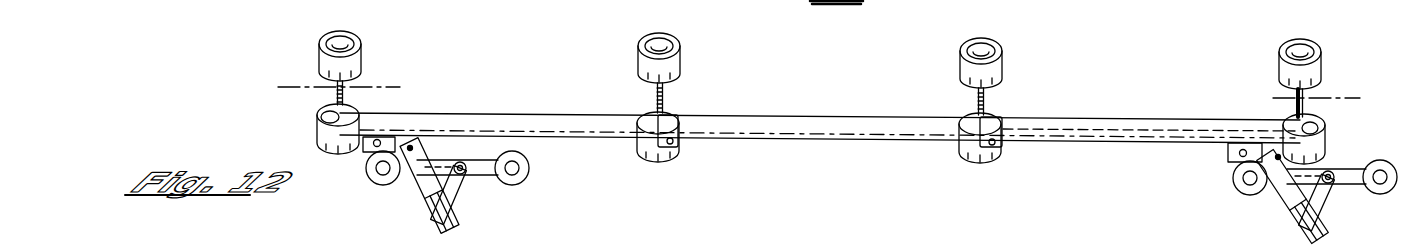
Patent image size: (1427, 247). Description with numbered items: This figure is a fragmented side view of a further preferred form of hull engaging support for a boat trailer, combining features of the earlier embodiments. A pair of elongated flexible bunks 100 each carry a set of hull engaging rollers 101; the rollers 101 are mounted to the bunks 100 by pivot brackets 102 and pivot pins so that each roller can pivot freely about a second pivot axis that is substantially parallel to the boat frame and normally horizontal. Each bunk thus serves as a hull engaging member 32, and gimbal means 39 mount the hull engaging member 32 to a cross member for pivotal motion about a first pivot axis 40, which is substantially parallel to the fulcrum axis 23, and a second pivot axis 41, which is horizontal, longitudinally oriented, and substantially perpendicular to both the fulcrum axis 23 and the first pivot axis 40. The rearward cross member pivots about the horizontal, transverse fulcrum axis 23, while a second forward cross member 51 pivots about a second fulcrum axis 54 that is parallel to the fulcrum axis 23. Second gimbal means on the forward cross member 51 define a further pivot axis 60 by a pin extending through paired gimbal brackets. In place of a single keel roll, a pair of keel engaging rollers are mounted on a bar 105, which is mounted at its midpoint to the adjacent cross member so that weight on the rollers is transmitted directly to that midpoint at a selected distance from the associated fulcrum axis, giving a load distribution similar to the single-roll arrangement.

The elongated flexible bunk 100 is at (790, 120).
The hull engaging roller 101 is at (360, 63).
The pivot bracket 102 is at (663, 110).
The hull engaging member 32 is at (627, 57).
The gimbal means 39 is at (364, 170).
The first pivot axis 40 is at (378, 142).
The second pivot axis 41 is at (305, 87).
The fulcrum axis 23 is at (412, 145).
The bar 105 is at (483, 175).
The second fulcrum axis 54 is at (1277, 150).
The second forward cross member 51 is at (1285, 205).
The second pivot axis of second gimbal means 60 is at (1335, 98).